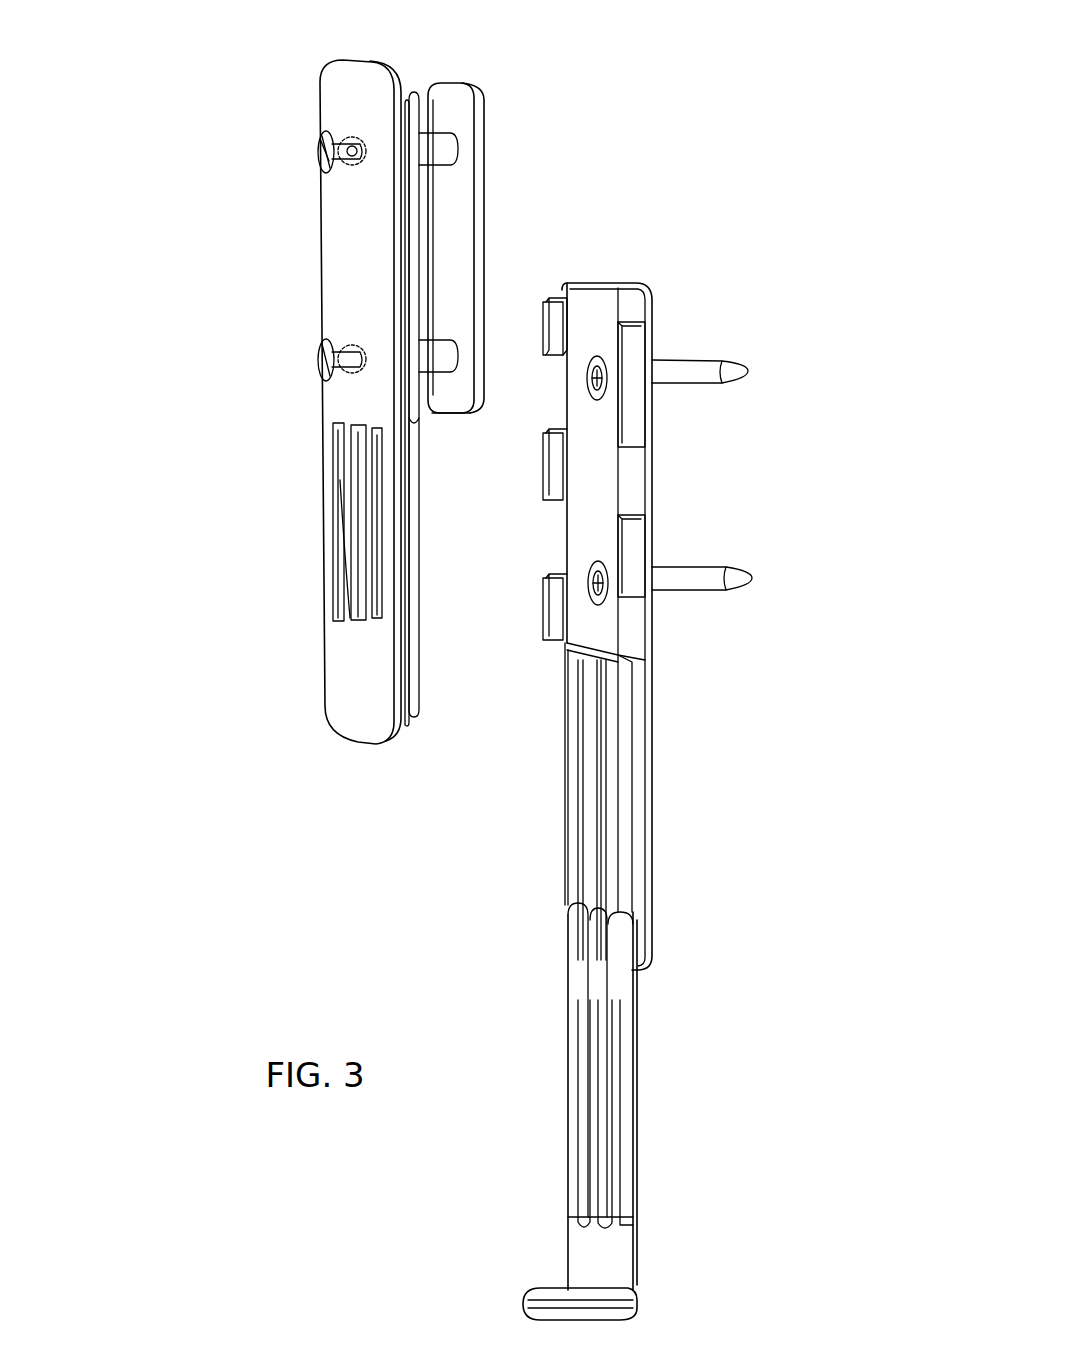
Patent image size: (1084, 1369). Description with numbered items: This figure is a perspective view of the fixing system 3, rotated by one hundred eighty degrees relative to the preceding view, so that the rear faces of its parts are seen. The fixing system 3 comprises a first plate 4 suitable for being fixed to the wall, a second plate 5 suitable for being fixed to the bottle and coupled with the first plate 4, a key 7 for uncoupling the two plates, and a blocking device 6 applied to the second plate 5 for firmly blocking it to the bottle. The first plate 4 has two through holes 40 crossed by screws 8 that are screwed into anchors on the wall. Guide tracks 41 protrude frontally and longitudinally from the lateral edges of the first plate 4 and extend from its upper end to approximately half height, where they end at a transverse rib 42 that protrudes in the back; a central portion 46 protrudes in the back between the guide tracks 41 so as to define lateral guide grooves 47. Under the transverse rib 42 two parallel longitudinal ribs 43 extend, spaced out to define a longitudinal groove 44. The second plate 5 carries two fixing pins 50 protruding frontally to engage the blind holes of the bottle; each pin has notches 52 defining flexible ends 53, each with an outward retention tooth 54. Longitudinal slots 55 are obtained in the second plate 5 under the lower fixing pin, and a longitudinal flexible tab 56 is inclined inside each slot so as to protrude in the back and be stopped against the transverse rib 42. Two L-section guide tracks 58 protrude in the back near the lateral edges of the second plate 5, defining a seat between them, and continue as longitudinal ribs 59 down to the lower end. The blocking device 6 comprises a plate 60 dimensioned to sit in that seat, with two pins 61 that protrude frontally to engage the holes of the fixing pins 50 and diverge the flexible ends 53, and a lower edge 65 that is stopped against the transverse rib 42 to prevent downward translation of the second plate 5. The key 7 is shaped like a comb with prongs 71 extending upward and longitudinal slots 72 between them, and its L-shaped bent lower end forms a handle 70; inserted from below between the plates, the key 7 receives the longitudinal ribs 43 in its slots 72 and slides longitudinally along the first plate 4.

The fixing system 3 is at (630, 165).
The first plate 4 is at (656, 978).
The second plate 5 is at (356, 750).
The blocking device 6 is at (468, 72).
The key 7 is at (641, 1285).
The screws 8 is at (680, 367).
The through holes 40 is at (590, 366).
The guide tracks 41 is at (553, 498).
The transverse rib 42 is at (632, 662).
The longitudinal ribs 43 is at (615, 762).
The longitudinal groove 44 is at (588, 728).
The central portion 46 is at (603, 423).
The lateral guide grooves 47 is at (563, 425).
The fixing pins 50 is at (345, 128).
The notches 52 is at (345, 170).
The flexible ends 53 is at (352, 148).
The retention tooth 54 is at (320, 143).
The longitudinal slots 55 is at (337, 482).
The longitudinal flexible tab 56 is at (345, 545).
The guide tracks 58 is at (414, 426).
The longitudinal ribs 59 is at (418, 690).
The plate 60 is at (467, 223).
The pins 61 is at (437, 135).
The lower edge 65 is at (453, 407).
The handle 70 is at (558, 1297).
The prongs 71 is at (572, 1090).
The longitudinal slots 72 is at (580, 1063).